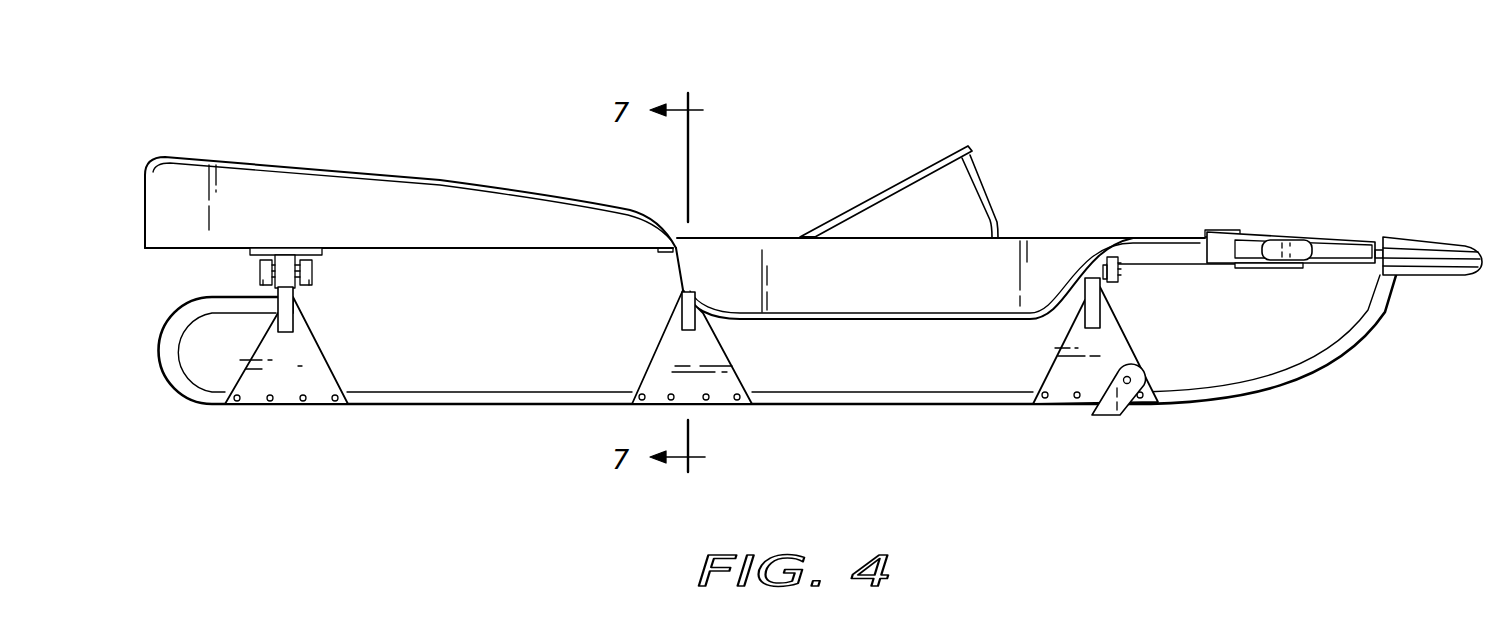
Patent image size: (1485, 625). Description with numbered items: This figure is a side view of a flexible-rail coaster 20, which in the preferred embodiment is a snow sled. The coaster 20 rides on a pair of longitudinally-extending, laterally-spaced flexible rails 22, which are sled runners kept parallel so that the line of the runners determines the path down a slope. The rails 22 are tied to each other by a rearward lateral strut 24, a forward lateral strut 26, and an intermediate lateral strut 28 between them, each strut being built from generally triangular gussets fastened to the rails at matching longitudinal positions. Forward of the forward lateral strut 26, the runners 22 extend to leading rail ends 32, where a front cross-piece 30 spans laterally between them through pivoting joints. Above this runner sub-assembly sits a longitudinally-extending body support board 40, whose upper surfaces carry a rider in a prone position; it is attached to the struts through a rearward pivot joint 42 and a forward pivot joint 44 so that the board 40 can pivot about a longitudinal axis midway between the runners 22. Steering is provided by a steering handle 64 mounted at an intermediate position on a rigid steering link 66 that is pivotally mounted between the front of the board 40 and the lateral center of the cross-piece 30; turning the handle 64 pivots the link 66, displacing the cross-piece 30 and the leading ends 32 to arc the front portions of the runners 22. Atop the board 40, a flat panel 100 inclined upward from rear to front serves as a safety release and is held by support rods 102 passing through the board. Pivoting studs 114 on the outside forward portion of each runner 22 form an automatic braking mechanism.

The flexible-rail coaster 20 is at (1095, 68).
The flexible rails 22 is at (480, 397).
The rearward lateral strut 24 is at (323, 345).
The forward lateral strut 26 is at (1052, 380).
The intermediate lateral strut 28 is at (688, 347).
The front cross-piece 30 is at (1417, 243).
The leading rail ends 32 is at (1384, 314).
The body support board 40 is at (262, 222).
The rearward pivot joint 42 is at (313, 272).
The forward pivot joint 44 is at (1119, 276).
The steering handle 64 is at (1298, 247).
The steering link 66 is at (1294, 202).
The flat panel 100 is at (878, 190).
The support rods 102 is at (985, 190).
The pivoting studs 114 is at (1133, 373).